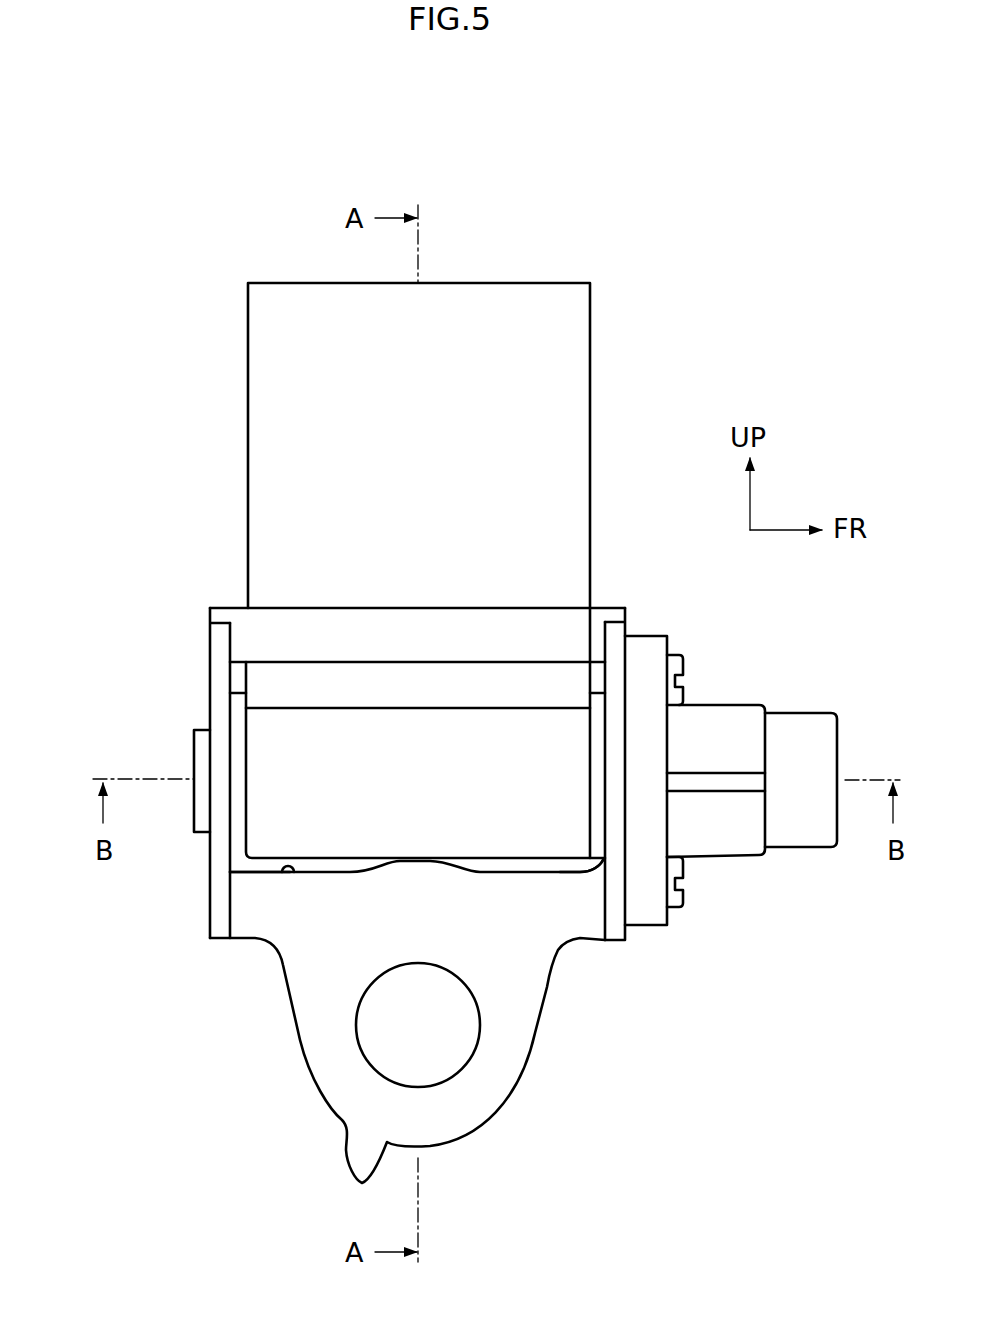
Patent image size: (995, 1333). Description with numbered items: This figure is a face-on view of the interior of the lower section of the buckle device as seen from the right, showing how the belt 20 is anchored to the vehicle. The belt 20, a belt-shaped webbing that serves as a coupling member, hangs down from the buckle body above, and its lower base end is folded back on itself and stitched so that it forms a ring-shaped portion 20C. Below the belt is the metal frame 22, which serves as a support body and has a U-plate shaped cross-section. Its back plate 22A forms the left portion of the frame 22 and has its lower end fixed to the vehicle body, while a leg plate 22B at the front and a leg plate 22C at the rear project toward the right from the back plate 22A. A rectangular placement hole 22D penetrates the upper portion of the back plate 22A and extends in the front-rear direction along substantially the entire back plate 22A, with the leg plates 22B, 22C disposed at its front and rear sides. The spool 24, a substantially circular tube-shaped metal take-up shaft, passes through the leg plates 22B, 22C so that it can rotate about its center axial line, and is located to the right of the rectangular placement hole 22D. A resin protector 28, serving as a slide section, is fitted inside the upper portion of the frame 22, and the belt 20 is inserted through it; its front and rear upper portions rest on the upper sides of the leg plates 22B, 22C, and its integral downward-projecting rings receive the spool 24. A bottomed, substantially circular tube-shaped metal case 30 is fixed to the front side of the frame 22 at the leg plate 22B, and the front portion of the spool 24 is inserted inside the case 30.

The belt 20 is at (248, 422).
The ring-shaped portion 20C is at (512, 705).
The frame 22 is at (210, 640).
The back plate 22A is at (303, 1064).
The leg plate 22B is at (627, 913).
The leg plate 22C is at (208, 913).
The rectangular placement hole 22D is at (283, 874).
The spool 24 is at (198, 730).
The protector 28 is at (226, 605).
The case 30 is at (722, 705).